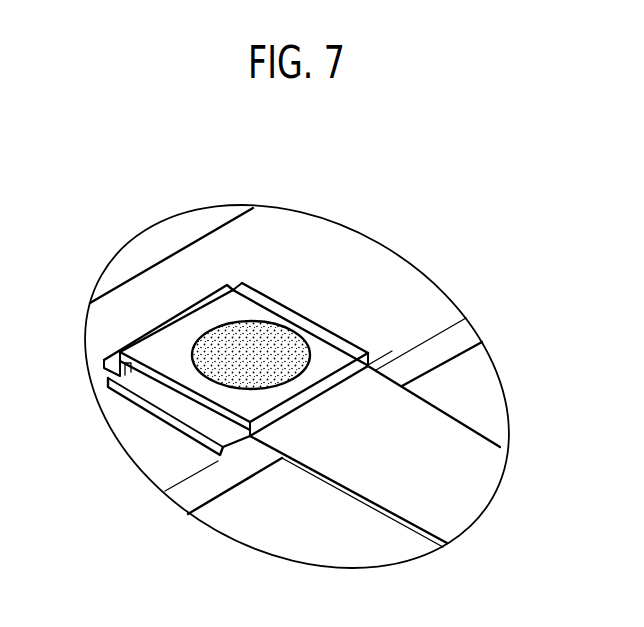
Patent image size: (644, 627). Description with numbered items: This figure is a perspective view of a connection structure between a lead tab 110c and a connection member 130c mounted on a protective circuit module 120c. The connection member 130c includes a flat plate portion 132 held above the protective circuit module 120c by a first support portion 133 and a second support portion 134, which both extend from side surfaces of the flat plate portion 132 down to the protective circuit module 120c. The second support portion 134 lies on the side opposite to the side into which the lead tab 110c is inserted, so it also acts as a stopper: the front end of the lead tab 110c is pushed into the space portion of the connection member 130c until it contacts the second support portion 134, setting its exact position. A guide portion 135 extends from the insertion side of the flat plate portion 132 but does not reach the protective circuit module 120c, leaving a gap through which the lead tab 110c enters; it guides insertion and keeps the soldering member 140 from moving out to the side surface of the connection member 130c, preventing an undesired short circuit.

The lead tab 110c is at (333, 500).
The protective circuit module 120c is at (205, 258).
The connection member 130c is at (320, 288).
The flat plate portion 132 is at (252, 307).
The first support portion 133 is at (167, 383).
The second support portion 134 is at (168, 314).
The guide portion 135 is at (313, 392).
The soldering member 140 is at (272, 357).